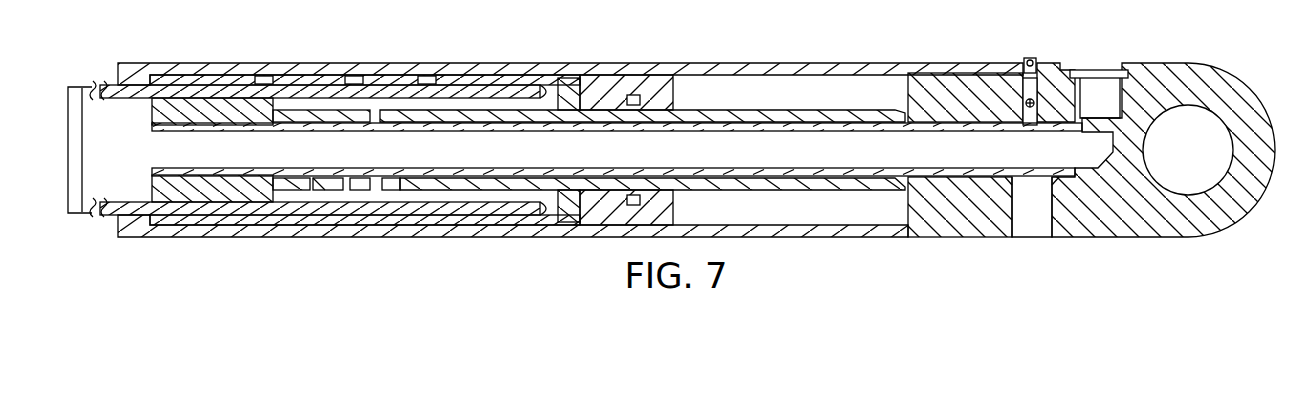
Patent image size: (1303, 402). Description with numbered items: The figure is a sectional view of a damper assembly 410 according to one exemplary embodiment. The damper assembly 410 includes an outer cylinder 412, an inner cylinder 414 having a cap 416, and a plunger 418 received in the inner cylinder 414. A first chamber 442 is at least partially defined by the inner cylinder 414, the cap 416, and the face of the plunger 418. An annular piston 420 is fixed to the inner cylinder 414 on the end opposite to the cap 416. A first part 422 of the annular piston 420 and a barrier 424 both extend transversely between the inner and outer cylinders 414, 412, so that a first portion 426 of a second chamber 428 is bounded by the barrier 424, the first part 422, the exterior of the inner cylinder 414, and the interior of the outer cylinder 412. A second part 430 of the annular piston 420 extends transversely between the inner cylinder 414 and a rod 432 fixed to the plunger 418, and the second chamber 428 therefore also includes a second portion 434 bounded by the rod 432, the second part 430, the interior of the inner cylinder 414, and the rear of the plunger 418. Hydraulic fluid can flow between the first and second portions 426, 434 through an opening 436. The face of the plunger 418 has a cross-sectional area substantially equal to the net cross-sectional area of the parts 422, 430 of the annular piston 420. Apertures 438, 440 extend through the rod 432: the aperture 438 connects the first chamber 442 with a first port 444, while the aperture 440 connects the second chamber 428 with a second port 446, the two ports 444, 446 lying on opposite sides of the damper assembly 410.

The damper assembly 410 is at (677, 46).
The outer cylinder 412 is at (240, 64).
The inner cylinder 414 is at (335, 88).
The cap 416 is at (77, 88).
The plunger 418 is at (112, 214).
The annular piston 420 is at (613, 87).
The first part of the annular piston 422 is at (492, 80).
The barrier 424 is at (263, 90).
The first portion of the second chamber 426 is at (427, 80).
The second chamber 428 is at (355, 82).
The second part of the annular piston 430 is at (542, 90).
The rod 432 is at (758, 114).
The second portion of the second chamber 434 is at (453, 105).
The opening 436 is at (378, 113).
The aperture 438 is at (598, 162).
The aperture 440 is at (877, 178).
The first chamber 442 is at (100, 162).
The first port 444 is at (1100, 62).
The second port 446 is at (1032, 238).